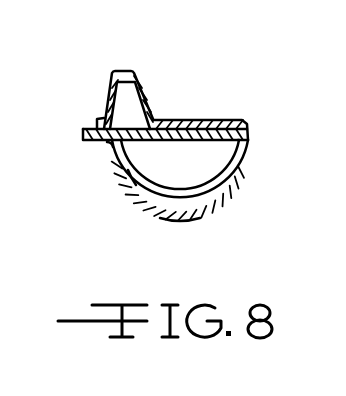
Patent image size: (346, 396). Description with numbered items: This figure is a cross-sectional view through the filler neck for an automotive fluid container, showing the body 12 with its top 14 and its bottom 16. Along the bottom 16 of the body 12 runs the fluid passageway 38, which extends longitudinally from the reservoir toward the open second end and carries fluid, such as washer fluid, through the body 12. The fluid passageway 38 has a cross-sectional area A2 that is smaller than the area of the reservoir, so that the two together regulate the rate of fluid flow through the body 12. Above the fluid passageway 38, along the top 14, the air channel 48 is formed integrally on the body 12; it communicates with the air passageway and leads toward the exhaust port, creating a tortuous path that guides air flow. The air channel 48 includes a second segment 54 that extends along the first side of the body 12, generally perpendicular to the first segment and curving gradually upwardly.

The body 12 is at (217, 212).
The top 14 is at (211, 119).
The bottom 16 is at (172, 221).
The fluid passageway 38 is at (224, 163).
The air channel 48 is at (107, 103).
The second segment 54 is at (151, 83).
The area of the fluid passageway A2 is at (141, 178).